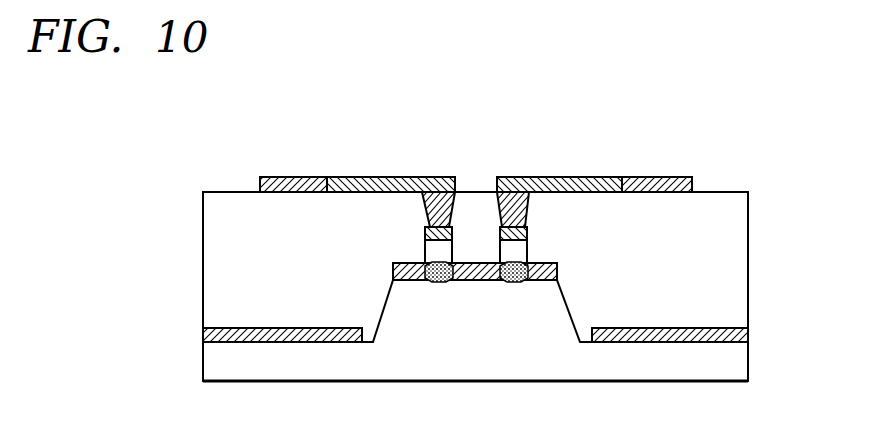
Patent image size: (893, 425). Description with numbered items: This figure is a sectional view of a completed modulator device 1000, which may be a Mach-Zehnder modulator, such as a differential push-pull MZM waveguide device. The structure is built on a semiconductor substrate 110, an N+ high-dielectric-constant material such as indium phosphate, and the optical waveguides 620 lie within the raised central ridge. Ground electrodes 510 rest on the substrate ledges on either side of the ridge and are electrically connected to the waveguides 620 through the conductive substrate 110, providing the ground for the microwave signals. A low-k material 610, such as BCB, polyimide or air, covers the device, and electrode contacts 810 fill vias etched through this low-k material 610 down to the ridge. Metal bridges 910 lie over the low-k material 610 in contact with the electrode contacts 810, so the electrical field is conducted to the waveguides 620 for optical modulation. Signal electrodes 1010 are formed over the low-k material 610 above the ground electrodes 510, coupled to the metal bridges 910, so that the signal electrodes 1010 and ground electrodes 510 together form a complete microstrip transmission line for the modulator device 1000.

The modulator device 1000 is at (733, 157).
The low-k material 610 is at (203, 235).
The semiconductor substrate 110 is at (492, 358).
The ground electrodes 510 is at (276, 328).
The signal electrodes 1010 is at (287, 177).
The metal bridges 910 is at (381, 177).
The electrode contacts 810 is at (507, 208).
The waveguides 620 is at (440, 283).